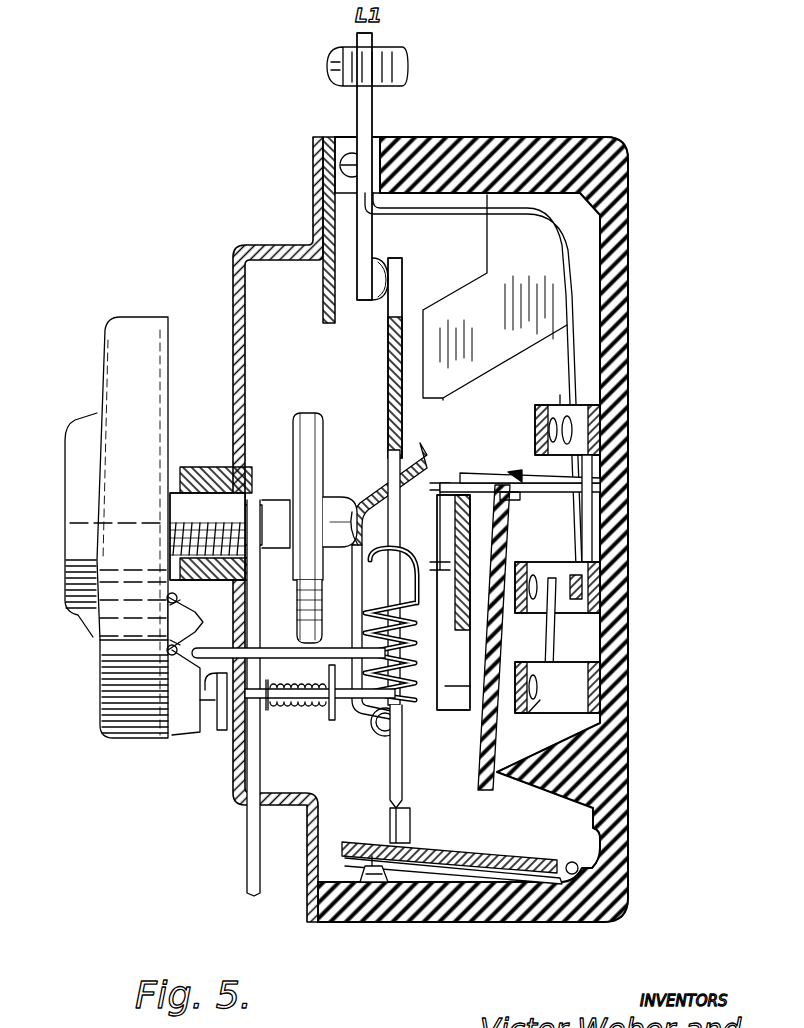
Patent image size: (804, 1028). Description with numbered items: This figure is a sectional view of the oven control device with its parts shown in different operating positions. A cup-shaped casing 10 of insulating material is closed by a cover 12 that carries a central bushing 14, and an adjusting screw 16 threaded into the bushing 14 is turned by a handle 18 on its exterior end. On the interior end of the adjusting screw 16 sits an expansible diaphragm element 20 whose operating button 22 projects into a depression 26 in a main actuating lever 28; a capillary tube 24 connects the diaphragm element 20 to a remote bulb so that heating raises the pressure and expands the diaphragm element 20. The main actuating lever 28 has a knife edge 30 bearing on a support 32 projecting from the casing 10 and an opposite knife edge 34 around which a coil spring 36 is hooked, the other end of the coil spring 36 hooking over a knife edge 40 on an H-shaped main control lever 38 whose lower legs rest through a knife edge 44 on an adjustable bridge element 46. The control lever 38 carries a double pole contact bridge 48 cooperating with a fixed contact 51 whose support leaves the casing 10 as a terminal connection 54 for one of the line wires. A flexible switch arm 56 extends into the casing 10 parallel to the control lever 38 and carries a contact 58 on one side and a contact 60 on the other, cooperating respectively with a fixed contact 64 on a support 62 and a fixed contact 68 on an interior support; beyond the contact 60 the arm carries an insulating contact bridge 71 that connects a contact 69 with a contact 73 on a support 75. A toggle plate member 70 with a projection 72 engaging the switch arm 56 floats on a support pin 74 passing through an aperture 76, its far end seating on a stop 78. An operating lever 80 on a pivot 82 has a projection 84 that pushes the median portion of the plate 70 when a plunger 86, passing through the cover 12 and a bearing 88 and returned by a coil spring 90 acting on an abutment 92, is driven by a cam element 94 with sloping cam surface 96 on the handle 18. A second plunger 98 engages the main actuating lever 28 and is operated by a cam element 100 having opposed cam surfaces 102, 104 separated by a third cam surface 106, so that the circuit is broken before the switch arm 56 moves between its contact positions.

The casing 10 is at (634, 168).
The cover 12 is at (240, 254).
The bushing 14 is at (190, 465).
The adjusting screw 16 is at (210, 495).
The handle 18 is at (145, 315).
The diaphragm element 20 is at (307, 420).
The operating button 22 is at (342, 500).
The capillary tube 24 is at (247, 815).
The depression 26 is at (364, 522).
The main actuating lever 28 is at (355, 592).
The knife edge 30 is at (430, 455).
The support 32 is at (495, 350).
The knife edge 34 is at (380, 736).
The coil spring 36 is at (400, 640).
The main control lever 38 is at (402, 765).
The knife edge 40 is at (400, 572).
The knife edge 44 is at (408, 805).
The adjustable bridge element 46 is at (535, 852).
The double pole contact bridge 48 is at (404, 265).
The fixed contact 51 is at (374, 258).
The terminal connection 54 is at (373, 108).
The flexible switch arm 56 is at (575, 270).
The contact 58 is at (565, 395).
The contact 60 is at (580, 600).
The support 62 is at (602, 420).
The fixed contact 64 is at (560, 415).
The fixed contact 68 is at (602, 600).
The contact 69 is at (535, 560).
The toggle plate member 70 is at (480, 735).
The contact bridge 71 is at (545, 628).
The projection 72 is at (520, 468).
The contact 73 is at (526, 717).
The support pin 74 is at (480, 460).
The support 75 is at (602, 690).
The aperture 76 is at (510, 500).
The stop 78 is at (550, 770).
The operating lever 80 is at (458, 682).
The pivot 82 is at (438, 510).
The projection 84 is at (455, 598).
The plunger 86 is at (222, 735).
The bearing 88 is at (330, 722).
The coil spring 90 is at (300, 700).
The abutment 92 is at (272, 712).
The cam element 94 is at (175, 738).
The sloping cam surface 96 is at (195, 704).
The plunger 98 is at (215, 647).
The cam element 100 is at (175, 612).
The cam surface 102 is at (168, 598).
The cam surface 104 is at (100, 655).
The cam surface 106 is at (168, 645).